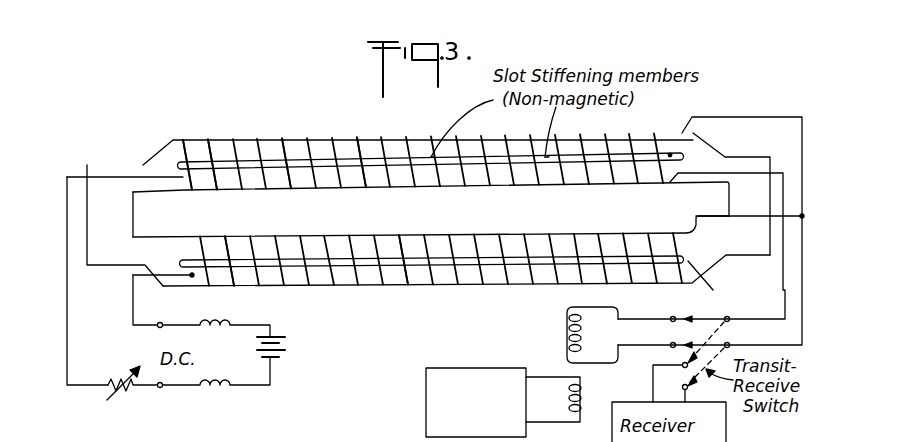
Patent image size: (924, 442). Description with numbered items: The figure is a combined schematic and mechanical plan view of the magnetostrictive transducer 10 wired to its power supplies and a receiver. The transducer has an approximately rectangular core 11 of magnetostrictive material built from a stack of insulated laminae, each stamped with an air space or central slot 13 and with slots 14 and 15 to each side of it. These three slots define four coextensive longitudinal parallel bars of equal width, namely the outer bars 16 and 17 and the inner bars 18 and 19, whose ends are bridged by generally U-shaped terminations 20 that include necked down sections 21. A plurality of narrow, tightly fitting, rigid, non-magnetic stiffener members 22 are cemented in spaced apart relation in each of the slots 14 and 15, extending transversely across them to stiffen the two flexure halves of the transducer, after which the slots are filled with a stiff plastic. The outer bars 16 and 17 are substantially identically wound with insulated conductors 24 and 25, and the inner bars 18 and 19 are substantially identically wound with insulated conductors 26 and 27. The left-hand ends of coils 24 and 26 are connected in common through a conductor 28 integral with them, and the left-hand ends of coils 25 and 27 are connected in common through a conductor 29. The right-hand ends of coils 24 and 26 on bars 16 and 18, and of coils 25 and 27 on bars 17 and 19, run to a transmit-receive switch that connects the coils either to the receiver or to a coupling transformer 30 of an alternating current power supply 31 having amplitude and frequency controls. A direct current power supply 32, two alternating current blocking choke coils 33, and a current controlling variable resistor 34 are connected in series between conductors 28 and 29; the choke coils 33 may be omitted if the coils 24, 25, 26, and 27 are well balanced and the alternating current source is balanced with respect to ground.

The magnetostrictive transducer 10 is at (250, 110).
The core 11 is at (416, 133).
The central slot 13 is at (426, 219).
The slot 14 is at (670, 153).
The slot 15 is at (476, 265).
The outer bar 16 is at (292, 136).
The outer bar 17 is at (353, 288).
The inner bar 18 is at (347, 188).
The inner bar 19 is at (486, 233).
The U-shaped terminations 20 is at (86, 165).
The necked down sections 21 is at (136, 170).
The stiffener members 22 is at (297, 183).
The insulated conductor 24 is at (182, 137).
The insulated conductor 25 is at (391, 288).
The insulated conductor 26 is at (208, 181).
The insulated conductor 27 is at (227, 245).
The conductor 28 is at (187, 177).
The conductor 29 is at (192, 276).
The coupling transformer 30 is at (566, 313).
The alternating current power supply 31 is at (483, 346).
The direct current power supply 32 is at (285, 357).
The choke coils 33 is at (231, 323).
The variable resistor 34 is at (118, 380).